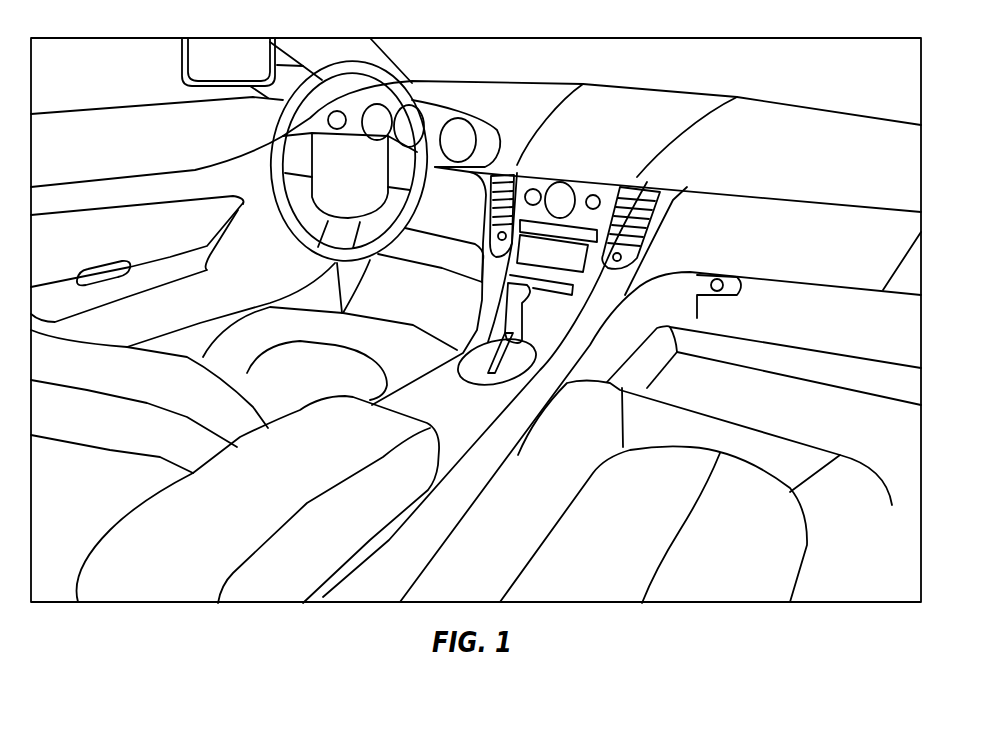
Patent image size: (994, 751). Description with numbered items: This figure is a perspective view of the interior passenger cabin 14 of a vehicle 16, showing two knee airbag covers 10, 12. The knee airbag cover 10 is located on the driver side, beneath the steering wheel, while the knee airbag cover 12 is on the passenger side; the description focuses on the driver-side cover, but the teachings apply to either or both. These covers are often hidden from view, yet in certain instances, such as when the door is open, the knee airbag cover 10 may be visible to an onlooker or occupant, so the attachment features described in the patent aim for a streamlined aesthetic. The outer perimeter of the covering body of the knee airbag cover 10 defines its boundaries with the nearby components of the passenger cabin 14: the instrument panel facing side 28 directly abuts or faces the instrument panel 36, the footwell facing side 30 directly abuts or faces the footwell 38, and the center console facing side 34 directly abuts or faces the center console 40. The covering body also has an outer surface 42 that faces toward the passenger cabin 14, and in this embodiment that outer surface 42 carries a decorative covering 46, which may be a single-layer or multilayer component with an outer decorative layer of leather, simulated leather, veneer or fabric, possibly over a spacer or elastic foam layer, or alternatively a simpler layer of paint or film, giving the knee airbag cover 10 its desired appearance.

The knee airbag cover 10 is at (400, 262).
The knee airbag cover 12 is at (910, 386).
The interior passenger cabin 14 is at (656, 49).
The vehicle 16 is at (722, 53).
The instrument panel facing side 28 is at (455, 236).
The footwell facing side 30 is at (428, 277).
The center console facing side 34 is at (483, 273).
The instrument panel 36 is at (428, 216).
The footwell 38 is at (372, 311).
The center console 40 is at (457, 350).
The outer surface 42 is at (408, 230).
The decorative covering 46 is at (367, 263).